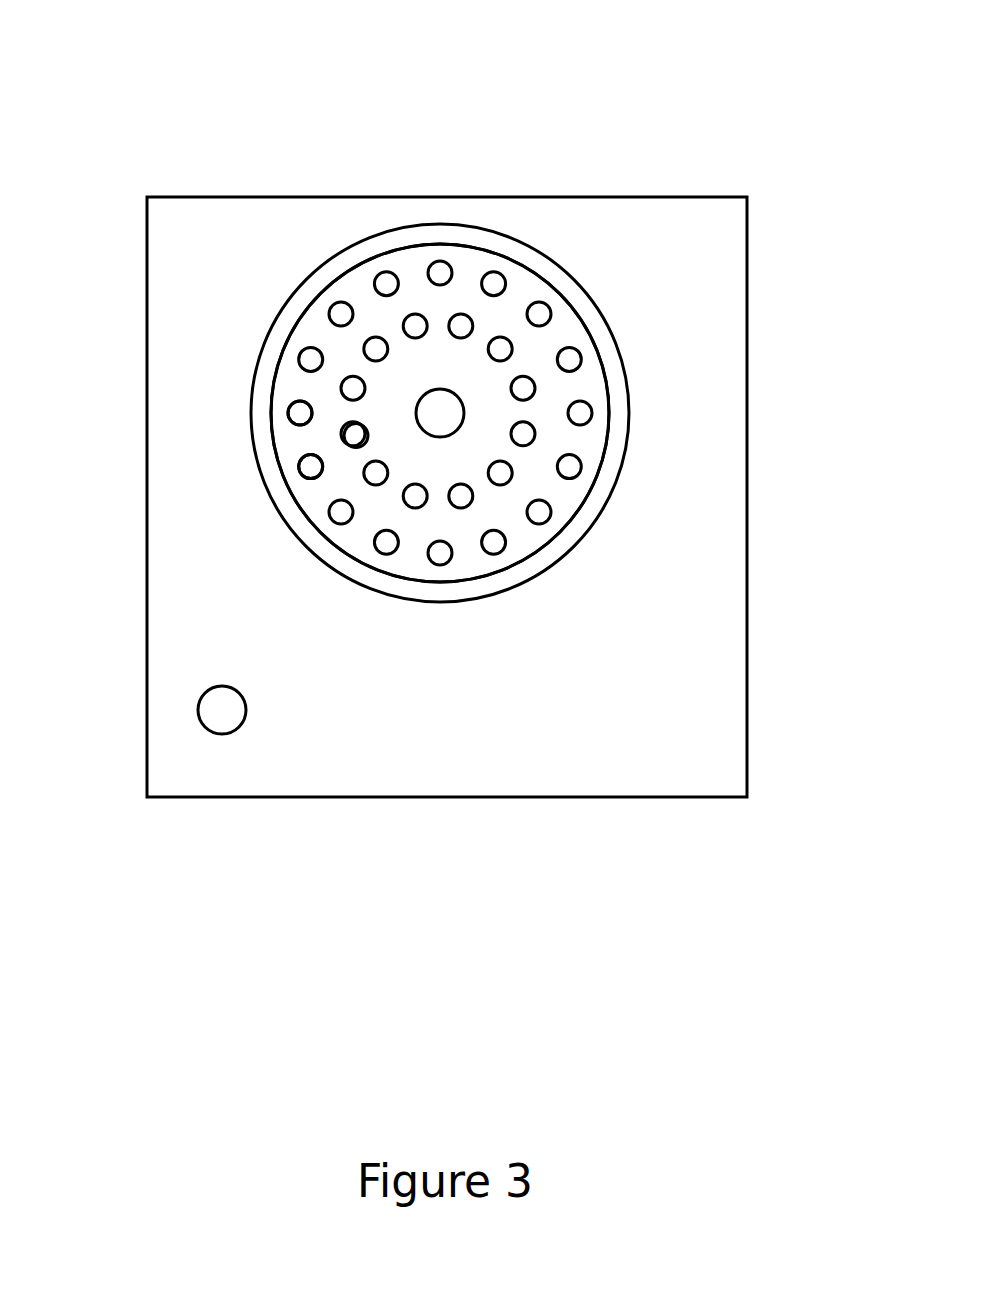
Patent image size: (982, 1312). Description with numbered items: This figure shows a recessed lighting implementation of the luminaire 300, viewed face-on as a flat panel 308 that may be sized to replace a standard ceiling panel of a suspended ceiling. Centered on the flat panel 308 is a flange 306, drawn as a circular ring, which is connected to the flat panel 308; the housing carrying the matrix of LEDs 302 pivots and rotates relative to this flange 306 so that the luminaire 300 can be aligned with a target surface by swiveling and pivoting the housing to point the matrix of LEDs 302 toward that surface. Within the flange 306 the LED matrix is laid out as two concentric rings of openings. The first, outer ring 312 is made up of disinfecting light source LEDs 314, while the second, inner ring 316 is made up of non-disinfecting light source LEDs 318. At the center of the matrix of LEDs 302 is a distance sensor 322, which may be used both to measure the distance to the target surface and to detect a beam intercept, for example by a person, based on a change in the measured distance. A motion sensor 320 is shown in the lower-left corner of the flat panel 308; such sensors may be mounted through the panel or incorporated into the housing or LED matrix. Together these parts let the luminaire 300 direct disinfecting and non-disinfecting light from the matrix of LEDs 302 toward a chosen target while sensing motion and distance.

The luminaire 300 is at (243, 57).
The matrix of LEDs 302 is at (298, 268).
The flange 306 is at (424, 237).
The flat panel 308 is at (623, 722).
The first (outer) ring 312 is at (288, 385).
The disinfecting light source LEDs 314 is at (503, 277).
The second (inner) ring 316 is at (323, 438).
The non-disinfecting light source LEDs 318 is at (408, 313).
The motion sensor 320 is at (212, 732).
The distance sensor 322 is at (465, 400).